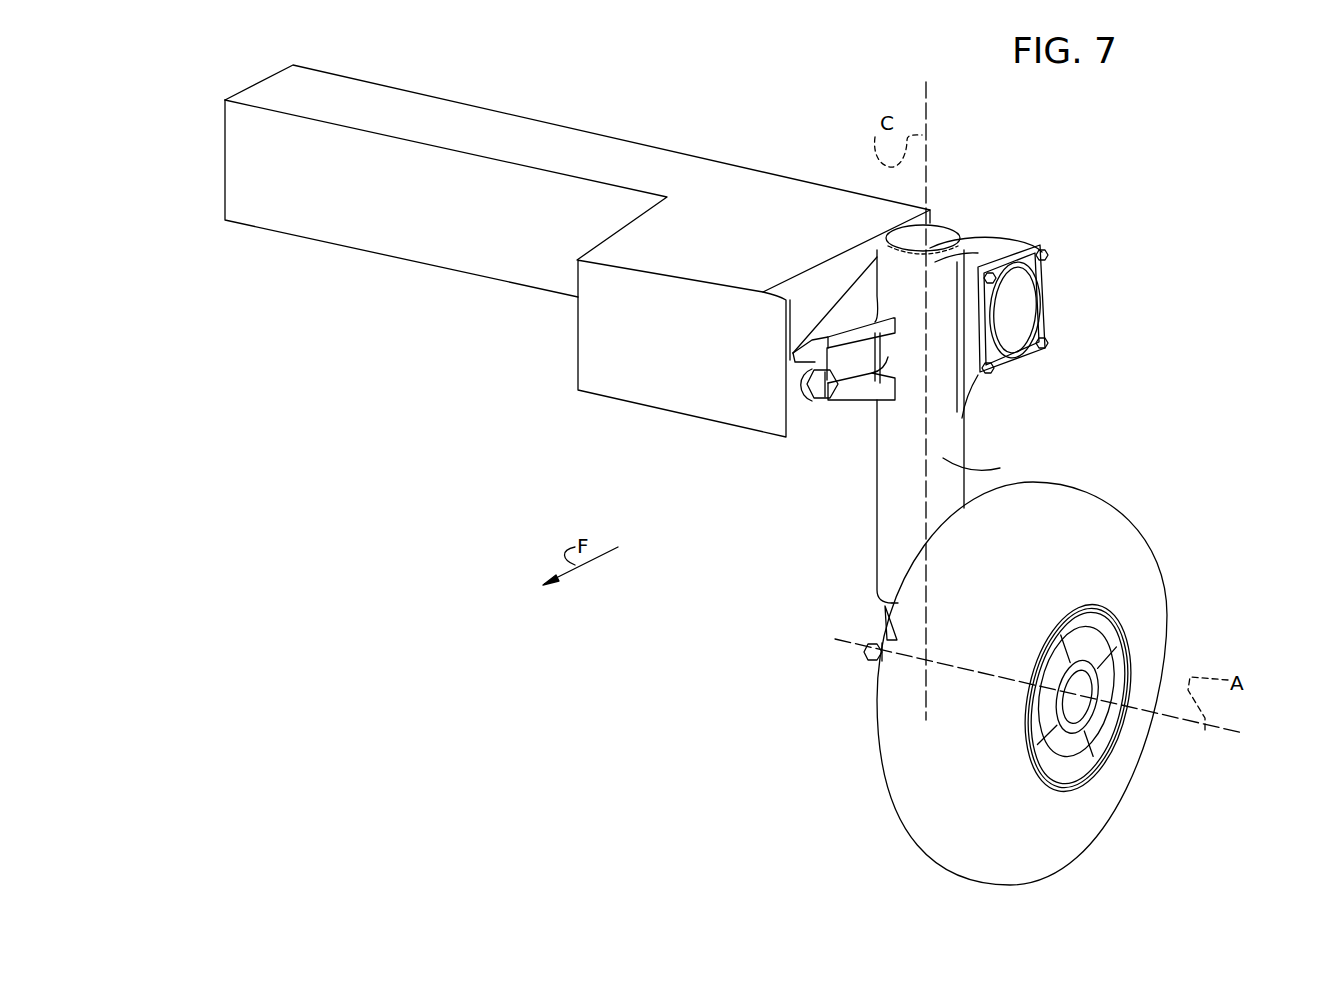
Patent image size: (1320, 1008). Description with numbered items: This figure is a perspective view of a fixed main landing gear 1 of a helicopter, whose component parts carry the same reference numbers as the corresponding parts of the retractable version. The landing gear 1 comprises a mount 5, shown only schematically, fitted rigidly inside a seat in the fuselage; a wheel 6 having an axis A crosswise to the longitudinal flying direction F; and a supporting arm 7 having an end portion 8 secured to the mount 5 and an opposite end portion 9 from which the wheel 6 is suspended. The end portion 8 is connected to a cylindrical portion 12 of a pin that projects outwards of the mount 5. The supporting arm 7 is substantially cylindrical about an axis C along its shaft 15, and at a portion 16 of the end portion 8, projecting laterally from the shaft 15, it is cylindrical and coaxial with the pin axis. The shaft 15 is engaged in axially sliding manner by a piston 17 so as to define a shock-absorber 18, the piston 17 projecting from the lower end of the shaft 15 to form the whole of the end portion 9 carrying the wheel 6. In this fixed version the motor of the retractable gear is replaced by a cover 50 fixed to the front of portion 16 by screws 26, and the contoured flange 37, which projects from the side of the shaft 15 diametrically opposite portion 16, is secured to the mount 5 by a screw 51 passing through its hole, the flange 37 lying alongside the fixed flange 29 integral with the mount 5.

The mount 5 is at (215, 170).
The cylindrical portion 12 is at (840, 260).
The end portion 8 is at (956, 219).
The shaft 15 is at (948, 460).
The portion 16 is at (986, 252).
The cover 50 is at (1023, 303).
The screws 26 is at (1050, 245).
The contoured flange 37 is at (848, 367).
The screw 51 is at (818, 400).
The flange 29 is at (805, 404).
The supporting arm 7 is at (842, 558).
The shock-absorber 18 is at (858, 598).
The piston 17 is at (875, 607).
The end portion 9 is at (866, 672).
The wheel 6 is at (915, 801).
The landing gear 1 is at (1175, 492).